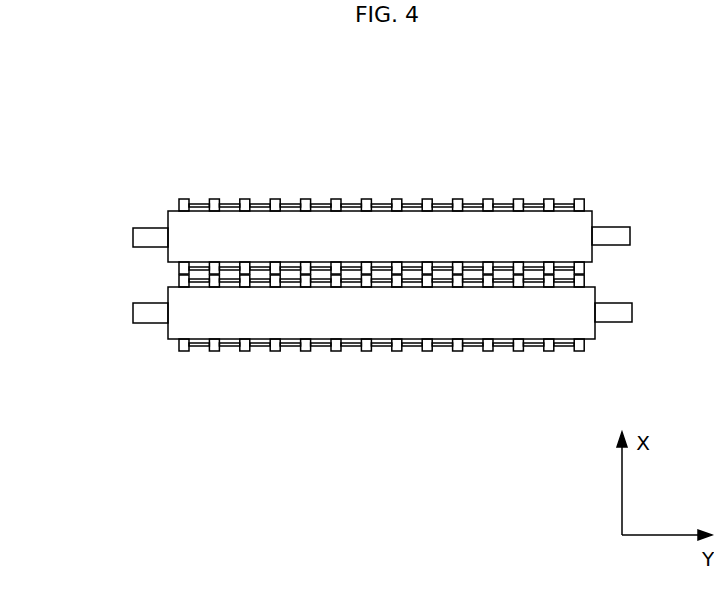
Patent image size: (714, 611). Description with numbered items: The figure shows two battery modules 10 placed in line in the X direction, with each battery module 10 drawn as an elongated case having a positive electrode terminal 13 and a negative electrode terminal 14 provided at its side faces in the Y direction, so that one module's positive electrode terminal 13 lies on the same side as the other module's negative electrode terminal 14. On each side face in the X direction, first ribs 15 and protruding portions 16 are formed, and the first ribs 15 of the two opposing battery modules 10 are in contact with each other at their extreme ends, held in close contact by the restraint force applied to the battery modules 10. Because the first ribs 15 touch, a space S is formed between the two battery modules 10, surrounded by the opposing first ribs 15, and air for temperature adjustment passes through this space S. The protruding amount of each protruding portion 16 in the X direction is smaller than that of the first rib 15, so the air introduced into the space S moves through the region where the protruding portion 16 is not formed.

The battery module 10 is at (600, 198).
The positive electrode terminal 13 is at (148, 236).
The negative electrode terminal 14 is at (150, 312).
The first rib 15 is at (275, 203).
The protruding portion 16 is at (258, 199).
The space S is at (288, 278).